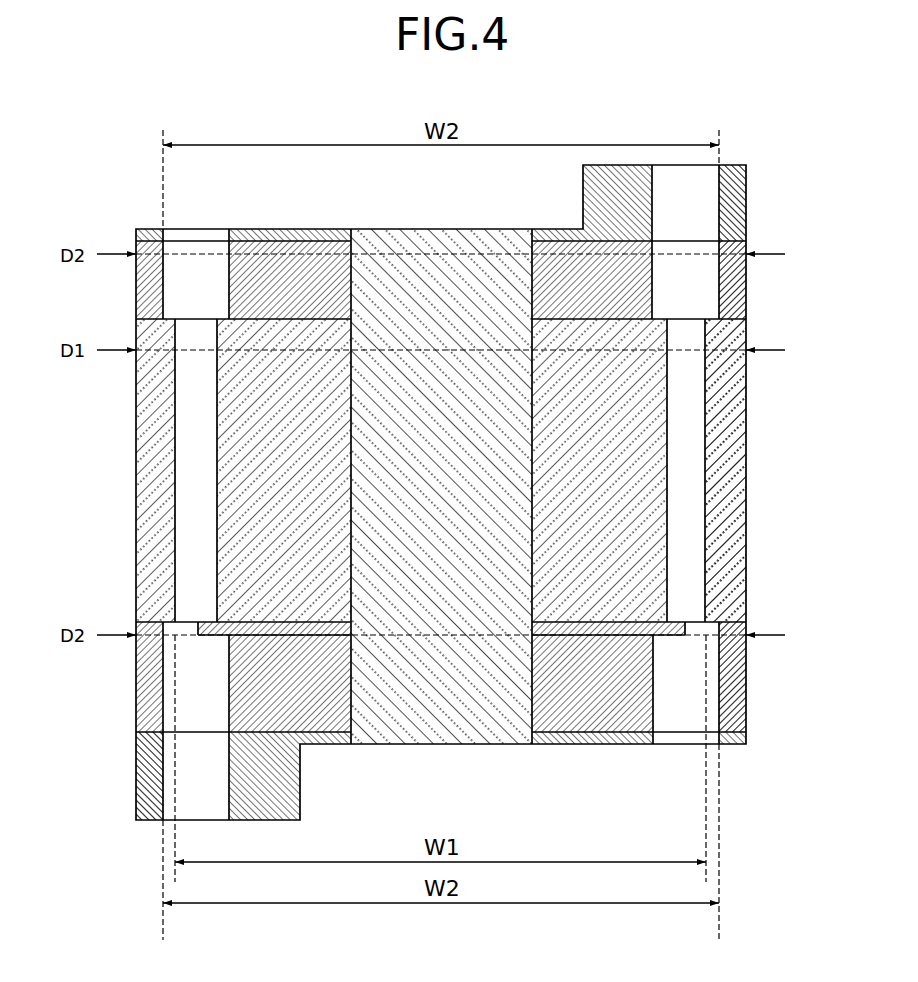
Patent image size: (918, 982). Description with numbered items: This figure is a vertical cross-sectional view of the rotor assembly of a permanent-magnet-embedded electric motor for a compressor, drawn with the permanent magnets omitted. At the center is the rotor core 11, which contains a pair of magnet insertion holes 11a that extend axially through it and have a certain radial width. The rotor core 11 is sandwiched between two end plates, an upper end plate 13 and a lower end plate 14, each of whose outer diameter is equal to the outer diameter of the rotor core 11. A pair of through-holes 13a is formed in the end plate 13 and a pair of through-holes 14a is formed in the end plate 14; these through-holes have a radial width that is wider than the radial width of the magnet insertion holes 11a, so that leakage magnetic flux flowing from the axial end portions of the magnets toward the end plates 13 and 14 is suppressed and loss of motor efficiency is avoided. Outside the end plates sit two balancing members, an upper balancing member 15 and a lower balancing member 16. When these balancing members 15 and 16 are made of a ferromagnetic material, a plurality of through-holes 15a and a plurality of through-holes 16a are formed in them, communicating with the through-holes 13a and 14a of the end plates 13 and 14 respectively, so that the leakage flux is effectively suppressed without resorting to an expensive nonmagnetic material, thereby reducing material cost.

The rotor core 11 is at (746, 466).
The magnet insertion holes 11a is at (707, 527).
The end plate 13 is at (746, 300).
The through-holes 13a is at (720, 312).
The end plate 14 is at (746, 683).
The through-holes 14a is at (720, 715).
The balancing member 15 is at (746, 182).
The through-holes 15a is at (720, 216).
The balancing member 16 is at (136, 763).
The through-holes 16a is at (163, 798).